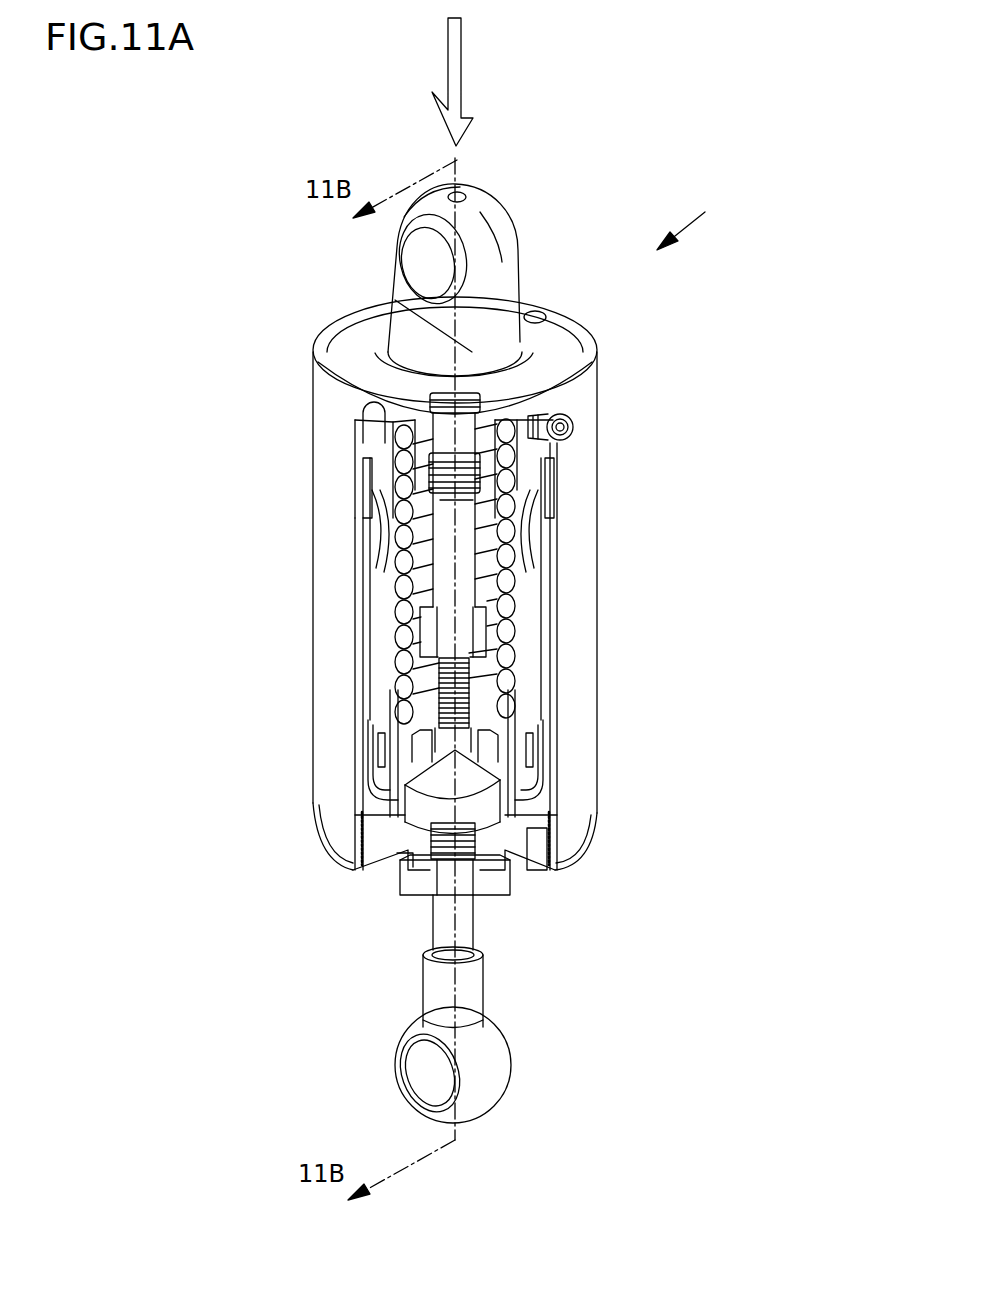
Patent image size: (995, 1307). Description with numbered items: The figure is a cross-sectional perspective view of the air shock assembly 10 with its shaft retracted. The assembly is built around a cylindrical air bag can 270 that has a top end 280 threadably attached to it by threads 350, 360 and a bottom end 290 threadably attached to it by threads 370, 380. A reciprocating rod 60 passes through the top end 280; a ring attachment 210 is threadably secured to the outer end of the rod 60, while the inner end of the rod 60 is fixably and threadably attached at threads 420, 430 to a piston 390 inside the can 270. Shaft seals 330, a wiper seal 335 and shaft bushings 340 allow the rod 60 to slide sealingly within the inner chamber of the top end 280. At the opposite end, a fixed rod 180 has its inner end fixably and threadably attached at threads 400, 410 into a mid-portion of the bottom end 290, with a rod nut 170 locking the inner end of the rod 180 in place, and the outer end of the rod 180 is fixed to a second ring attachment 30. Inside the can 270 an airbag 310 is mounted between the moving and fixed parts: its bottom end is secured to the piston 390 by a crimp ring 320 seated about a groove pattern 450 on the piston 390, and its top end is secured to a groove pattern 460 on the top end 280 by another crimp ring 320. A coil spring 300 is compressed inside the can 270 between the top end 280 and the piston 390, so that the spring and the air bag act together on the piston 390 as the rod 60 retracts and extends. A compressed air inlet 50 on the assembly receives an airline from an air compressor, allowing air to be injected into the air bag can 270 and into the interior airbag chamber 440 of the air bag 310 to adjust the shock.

The air shock assembly 10 is at (699, 225).
The ring attachment 30 is at (497, 1065).
The compressed air inlet 50 is at (573, 422).
The reciprocating rod 60 is at (467, 567).
The rod nut 170 is at (480, 887).
The fixed rod 180 is at (483, 960).
The ring attachment 210 is at (484, 217).
The cylindrical air bag can 270 is at (572, 553).
The top end 280 is at (352, 333).
The bottom end 290 is at (555, 865).
The coil spring 300 is at (372, 427).
The airbag 310 is at (367, 733).
The crimp ring 320 is at (540, 519).
The shaft seal 330 is at (480, 473).
The wiper seal 335 is at (440, 433).
The shaft bushings 340 is at (413, 453).
The threaded attachment 350 is at (365, 483).
The threaded attachment 360 is at (360, 462).
The threaded attachment 370 is at (560, 848).
The threaded attachment 380 is at (548, 825).
The piston 390 is at (397, 627).
The threaded attachment 400 is at (430, 838).
The threaded attachment 410 is at (410, 857).
The threaded attachment 420 is at (448, 698).
The threaded attachment 430 is at (470, 665).
The interior airbag chamber 440 is at (393, 727).
The groove pattern 450 is at (380, 757).
The groove pattern 460 is at (380, 523).